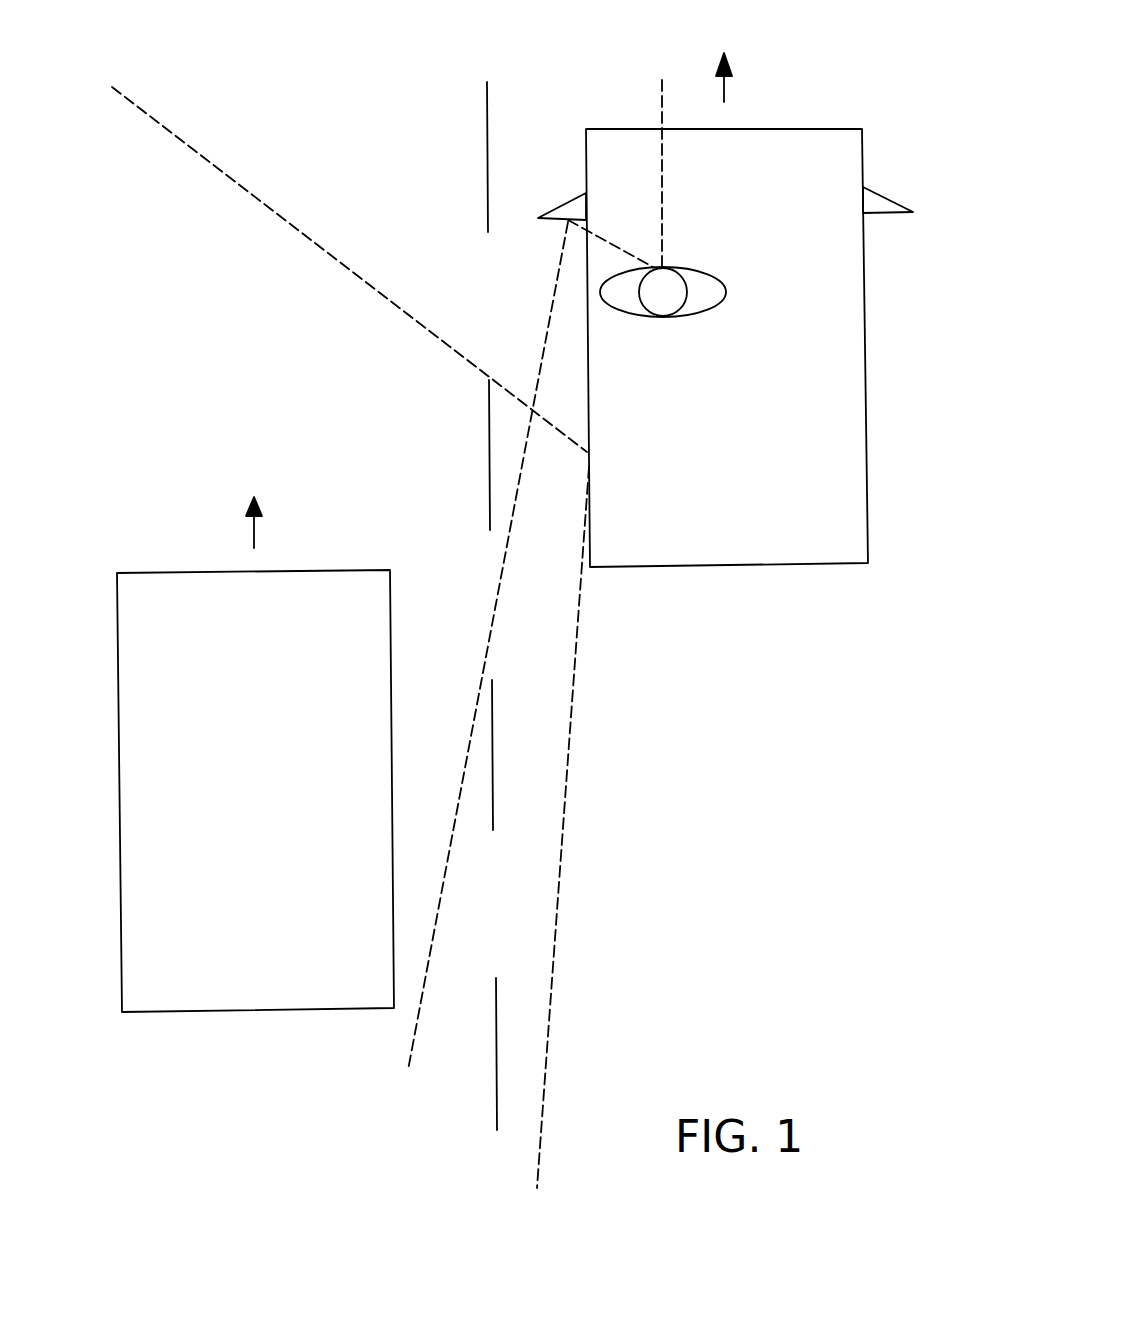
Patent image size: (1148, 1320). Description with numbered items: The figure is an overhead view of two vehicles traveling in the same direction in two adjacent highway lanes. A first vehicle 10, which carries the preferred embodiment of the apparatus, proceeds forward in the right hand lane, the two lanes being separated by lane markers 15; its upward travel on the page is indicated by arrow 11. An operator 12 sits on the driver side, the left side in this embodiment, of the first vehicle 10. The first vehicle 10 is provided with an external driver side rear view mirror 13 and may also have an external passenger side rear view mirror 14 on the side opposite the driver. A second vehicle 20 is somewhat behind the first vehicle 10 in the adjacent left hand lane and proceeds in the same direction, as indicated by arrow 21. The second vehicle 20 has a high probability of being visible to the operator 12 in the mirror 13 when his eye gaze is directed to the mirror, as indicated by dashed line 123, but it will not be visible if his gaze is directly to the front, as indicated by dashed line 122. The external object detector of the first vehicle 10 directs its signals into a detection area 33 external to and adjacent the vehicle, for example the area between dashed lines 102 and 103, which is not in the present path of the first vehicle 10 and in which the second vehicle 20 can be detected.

The first vehicle 10 is at (755, 565).
The arrow 11 is at (724, 92).
The operator 12 is at (690, 316).
The driver side rear view mirror 13 is at (561, 205).
The passenger side rear view mirror 14 is at (885, 196).
The lane markers 15 is at (487, 143).
The second vehicle 20 is at (272, 1010).
The arrow 21 is at (254, 523).
The detection area 33 is at (375, 465).
The dashed line 102 is at (227, 173).
The dashed line 103 is at (560, 868).
The dashed line 122 is at (662, 178).
The dashed line 123 is at (612, 240).